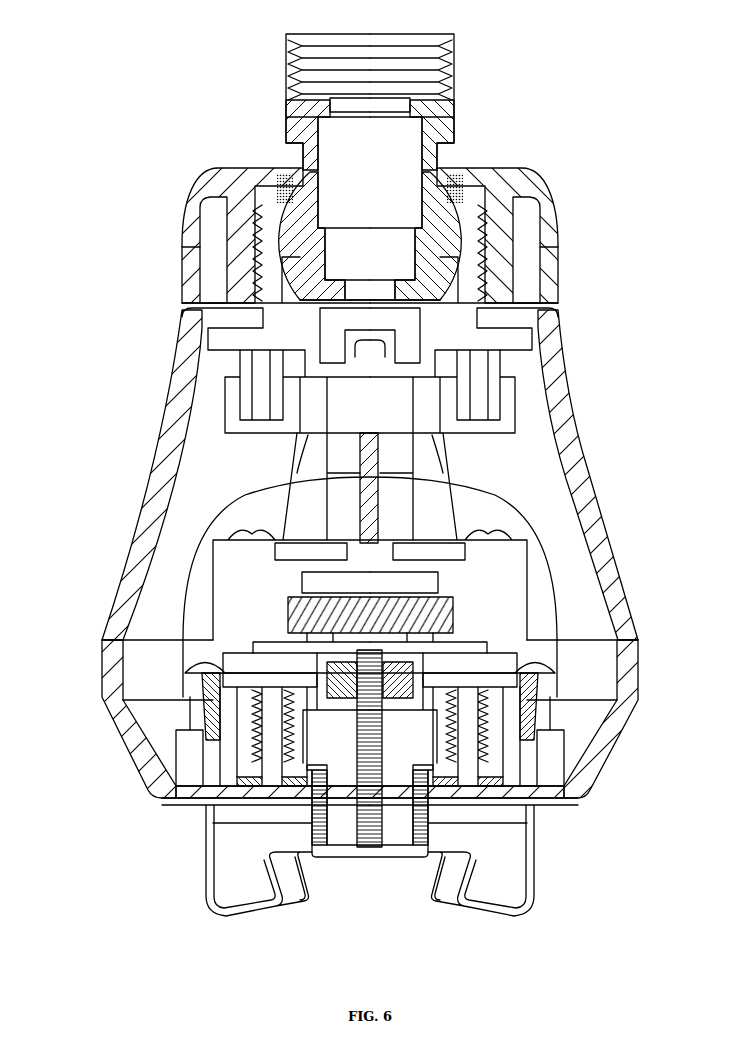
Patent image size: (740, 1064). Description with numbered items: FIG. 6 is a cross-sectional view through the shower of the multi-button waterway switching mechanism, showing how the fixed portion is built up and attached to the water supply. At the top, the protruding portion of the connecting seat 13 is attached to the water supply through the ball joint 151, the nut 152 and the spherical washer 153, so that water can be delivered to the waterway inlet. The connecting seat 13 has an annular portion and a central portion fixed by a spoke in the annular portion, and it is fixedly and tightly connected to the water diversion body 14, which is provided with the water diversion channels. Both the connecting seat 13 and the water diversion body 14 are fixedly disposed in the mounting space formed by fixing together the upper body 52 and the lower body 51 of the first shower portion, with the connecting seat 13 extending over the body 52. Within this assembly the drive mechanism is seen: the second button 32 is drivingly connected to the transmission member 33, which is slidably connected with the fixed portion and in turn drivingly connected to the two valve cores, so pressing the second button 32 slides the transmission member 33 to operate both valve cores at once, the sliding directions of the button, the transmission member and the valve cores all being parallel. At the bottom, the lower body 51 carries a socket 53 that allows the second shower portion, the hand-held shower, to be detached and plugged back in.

The ball joint 151 is at (443, 132).
The nut 152 is at (537, 208).
The spherical washer 153 is at (293, 290).
The connecting seat 13 is at (377, 372).
The water diversion body 14 is at (232, 426).
The transmission member 33 is at (380, 615).
The upper body 52 is at (138, 548).
The lower body 51 is at (118, 725).
The second button 32 is at (373, 855).
The socket 53 is at (533, 900).